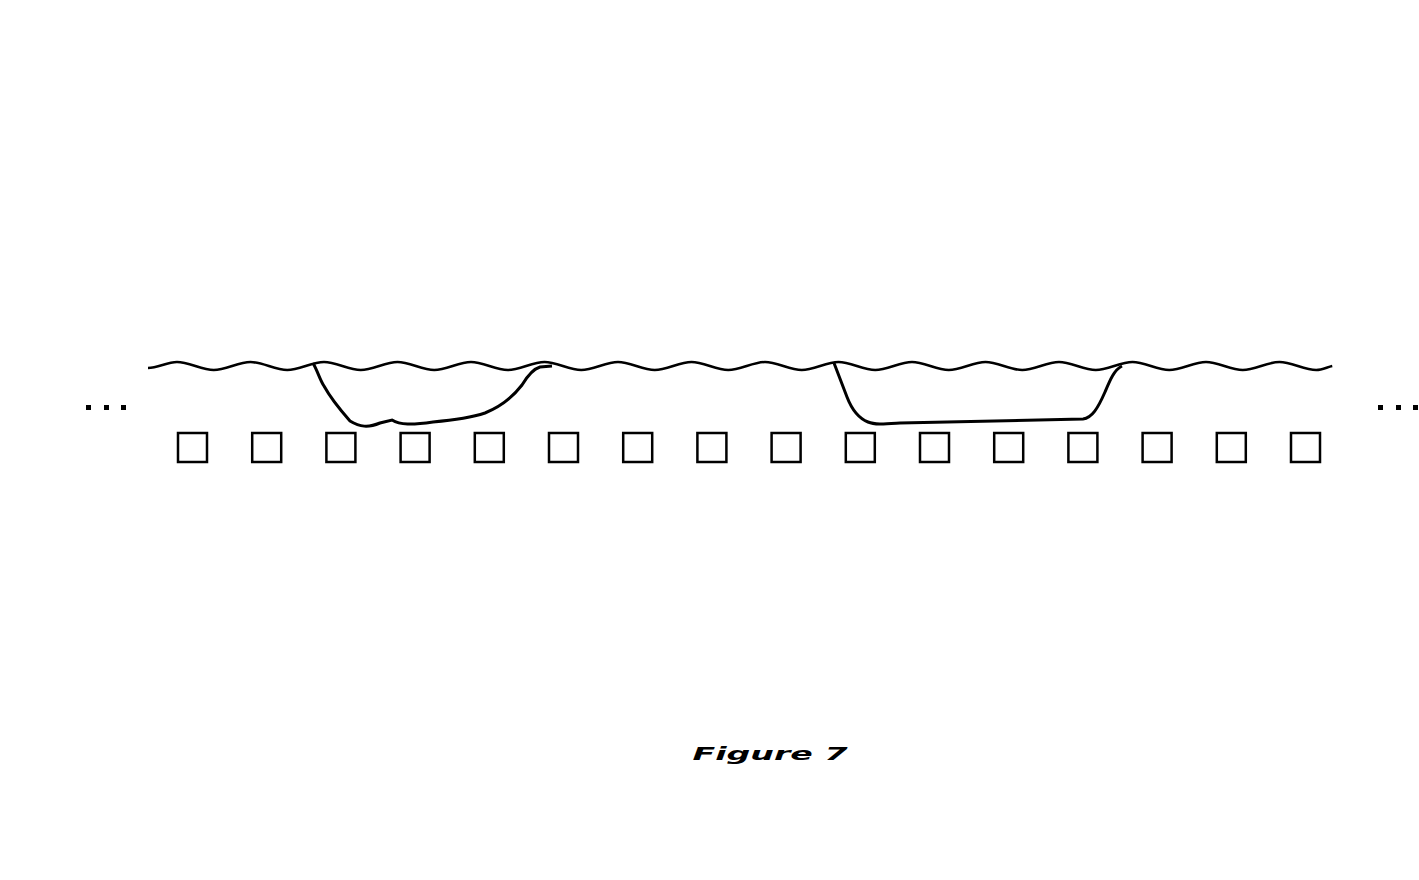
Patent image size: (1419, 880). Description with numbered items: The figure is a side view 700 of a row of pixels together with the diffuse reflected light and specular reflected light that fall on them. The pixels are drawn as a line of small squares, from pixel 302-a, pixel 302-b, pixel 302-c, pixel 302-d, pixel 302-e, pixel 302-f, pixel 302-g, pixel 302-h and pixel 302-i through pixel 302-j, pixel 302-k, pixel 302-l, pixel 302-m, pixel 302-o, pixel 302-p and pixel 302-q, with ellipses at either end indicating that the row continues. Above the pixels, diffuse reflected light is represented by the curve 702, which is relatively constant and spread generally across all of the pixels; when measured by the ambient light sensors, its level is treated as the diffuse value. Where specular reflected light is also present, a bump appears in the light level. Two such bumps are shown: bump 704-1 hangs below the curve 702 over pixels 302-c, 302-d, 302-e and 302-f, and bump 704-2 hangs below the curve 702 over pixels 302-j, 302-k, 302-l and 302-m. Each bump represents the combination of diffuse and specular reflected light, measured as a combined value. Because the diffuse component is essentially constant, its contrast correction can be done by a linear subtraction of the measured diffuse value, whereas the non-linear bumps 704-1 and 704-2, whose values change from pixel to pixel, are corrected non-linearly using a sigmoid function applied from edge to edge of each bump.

The side view 700 is at (1017, 116).
The curve 702 is at (291, 362).
The bump 704-1 is at (328, 399).
The bump 704-2 is at (848, 401).
The pixel 302-a is at (192, 462).
The pixel 302-b is at (267, 462).
The pixel 302-c is at (341, 462).
The pixel 302-d is at (415, 462).
The pixel 302-e is at (489, 462).
The pixel 302-f is at (564, 462).
The pixel 302-g is at (638, 462).
The pixel 302-h is at (712, 462).
The pixel 302-i is at (786, 462).
The pixel 302-j is at (860, 462).
The pixel 302-k is at (934, 462).
The pixel 302-l is at (1009, 462).
The pixel 302-m is at (1083, 462).
The pixel 302-o is at (1157, 462).
The pixel 302-p is at (1231, 462).
The pixel 302-q is at (1306, 462).